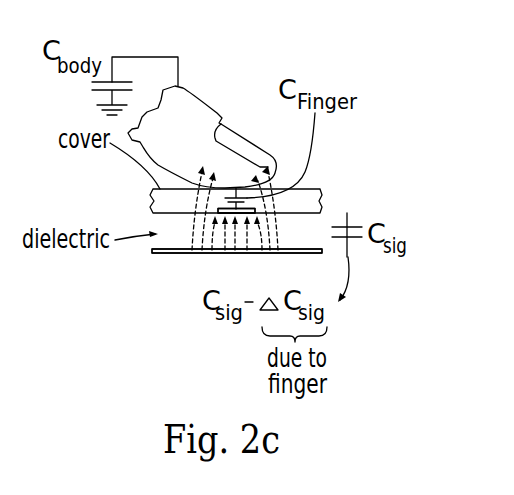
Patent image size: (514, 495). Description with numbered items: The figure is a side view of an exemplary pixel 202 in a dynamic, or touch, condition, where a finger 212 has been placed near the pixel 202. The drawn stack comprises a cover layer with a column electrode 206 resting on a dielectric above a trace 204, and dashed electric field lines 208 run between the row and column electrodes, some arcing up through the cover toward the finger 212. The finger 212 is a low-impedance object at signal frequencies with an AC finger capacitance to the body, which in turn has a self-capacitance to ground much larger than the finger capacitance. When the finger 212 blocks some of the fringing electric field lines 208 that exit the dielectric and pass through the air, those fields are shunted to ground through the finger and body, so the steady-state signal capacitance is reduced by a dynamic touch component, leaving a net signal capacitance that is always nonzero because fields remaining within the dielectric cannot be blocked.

The pixel 202 is at (183, 283).
The column trace 204 is at (163, 257).
The column 206 is at (218, 211).
The electric field lines 208 is at (283, 228).
The finger 212 is at (207, 110).